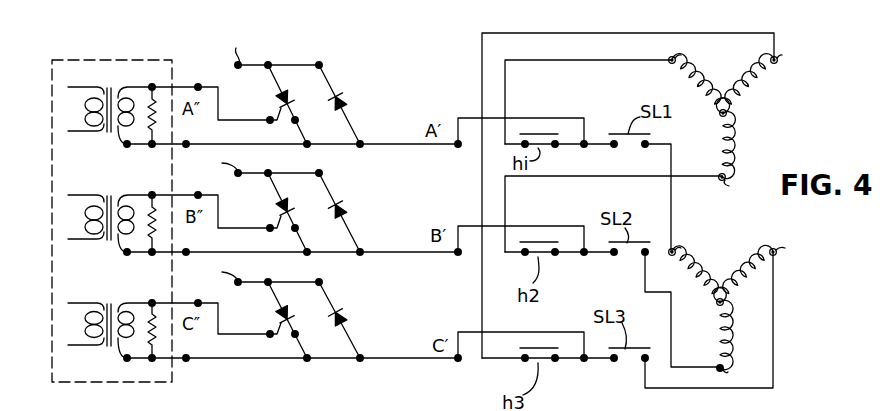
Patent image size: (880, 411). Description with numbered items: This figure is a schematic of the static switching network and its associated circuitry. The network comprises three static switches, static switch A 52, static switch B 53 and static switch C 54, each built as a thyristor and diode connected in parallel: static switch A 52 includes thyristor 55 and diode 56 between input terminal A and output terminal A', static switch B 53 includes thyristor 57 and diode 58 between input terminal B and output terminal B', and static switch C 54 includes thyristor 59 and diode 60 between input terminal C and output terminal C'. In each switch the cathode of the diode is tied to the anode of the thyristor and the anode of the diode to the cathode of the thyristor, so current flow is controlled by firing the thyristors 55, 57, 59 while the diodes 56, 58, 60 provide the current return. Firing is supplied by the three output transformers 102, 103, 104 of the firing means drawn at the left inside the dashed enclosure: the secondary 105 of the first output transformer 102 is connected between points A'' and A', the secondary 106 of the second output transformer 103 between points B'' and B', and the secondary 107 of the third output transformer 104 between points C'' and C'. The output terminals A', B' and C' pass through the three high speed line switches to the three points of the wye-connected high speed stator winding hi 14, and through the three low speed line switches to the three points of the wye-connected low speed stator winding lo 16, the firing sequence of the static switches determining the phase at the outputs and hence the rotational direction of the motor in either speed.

The output transformer T2 102 is at (104, 76).
The output transformer T3 103 is at (92, 188).
The output transformer T4 104 is at (92, 297).
The secondary of T2 105 is at (125, 98).
The secondary of T3 106 is at (128, 199).
The secondary of T4 107 is at (128, 308).
The static switch A 52 is at (360, 81).
The static switch B 53 is at (362, 211).
The static switch C 54 is at (366, 320).
The thyristor 55 is at (284, 91).
The diode 56 is at (350, 100).
The thyristor 57 is at (285, 198).
The diode 58 is at (338, 202).
The thyristor 59 is at (284, 305).
The diode 60 is at (338, 310).
The high speed stator winding means hi 14 is at (738, 119).
The low speed stator winding means lo 16 is at (740, 331).